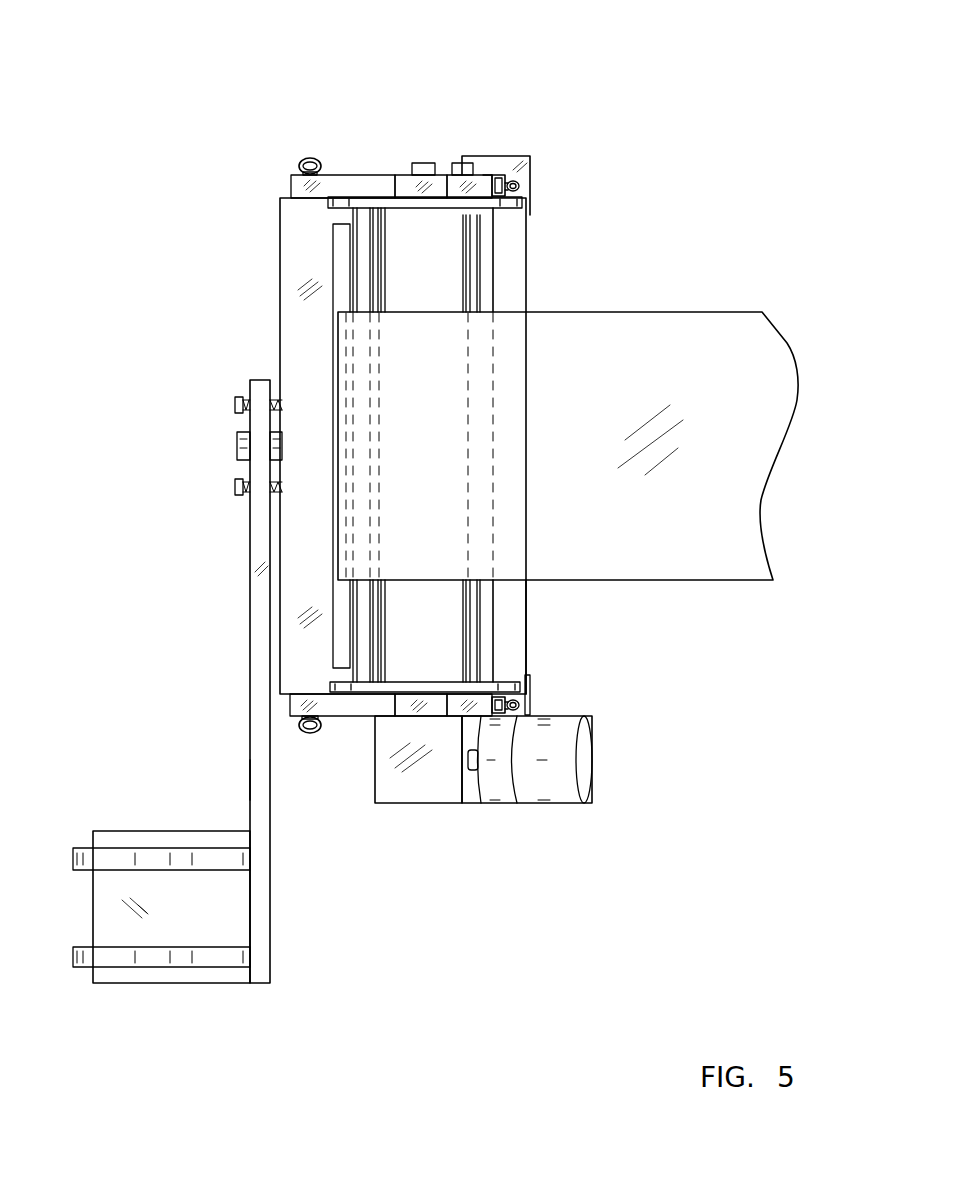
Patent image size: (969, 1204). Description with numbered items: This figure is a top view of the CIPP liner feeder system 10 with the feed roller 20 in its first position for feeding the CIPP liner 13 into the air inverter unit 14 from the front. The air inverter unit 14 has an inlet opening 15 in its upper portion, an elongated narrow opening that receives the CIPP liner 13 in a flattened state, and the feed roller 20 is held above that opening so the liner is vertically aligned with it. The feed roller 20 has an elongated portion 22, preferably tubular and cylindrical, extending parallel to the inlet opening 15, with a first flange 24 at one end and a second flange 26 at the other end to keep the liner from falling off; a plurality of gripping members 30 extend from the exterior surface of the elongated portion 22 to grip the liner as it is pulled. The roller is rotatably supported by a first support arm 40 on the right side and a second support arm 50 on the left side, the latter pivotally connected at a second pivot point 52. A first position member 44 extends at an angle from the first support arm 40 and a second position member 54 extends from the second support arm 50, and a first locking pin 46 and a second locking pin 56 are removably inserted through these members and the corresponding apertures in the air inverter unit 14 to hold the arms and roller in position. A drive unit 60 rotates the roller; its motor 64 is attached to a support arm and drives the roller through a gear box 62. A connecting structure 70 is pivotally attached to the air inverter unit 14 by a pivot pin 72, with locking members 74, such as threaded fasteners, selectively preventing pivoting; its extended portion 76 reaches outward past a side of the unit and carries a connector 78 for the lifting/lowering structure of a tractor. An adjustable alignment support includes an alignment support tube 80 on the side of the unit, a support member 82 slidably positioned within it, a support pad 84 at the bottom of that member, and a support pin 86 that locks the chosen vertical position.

The CIPP liner feeder system 10 is at (642, 128).
The CIPP liner 13 is at (653, 310).
The air inverter unit 14 is at (280, 289).
The inlet opening 15 is at (333, 253).
The feed roller 20 is at (497, 245).
The elongated portion 22 is at (493, 600).
The first flange 24 is at (430, 680).
The second flange 26 is at (508, 223).
The gripping members 30 is at (387, 288).
The first support arm 40 is at (480, 702).
The first position member 44 is at (350, 708).
The first locking pin 46 is at (307, 733).
The second support arm 50 is at (430, 185).
The second pivot point 52 is at (457, 167).
The second position member 54 is at (352, 188).
The second locking pin 56 is at (305, 157).
The drive unit 60 is at (539, 816).
The gear box 62 is at (390, 787).
The motor 64 is at (563, 748).
The connecting structure 70 is at (248, 602).
The pivot pin 72 is at (235, 445).
The locking members 74 is at (233, 405).
The extended portion 76 is at (248, 785).
The connector 78 is at (143, 985).
The alignment support tube 80 is at (500, 173).
The support member 82 is at (507, 176).
The support pad 84 is at (517, 155).
The support pin 86 is at (519, 185).